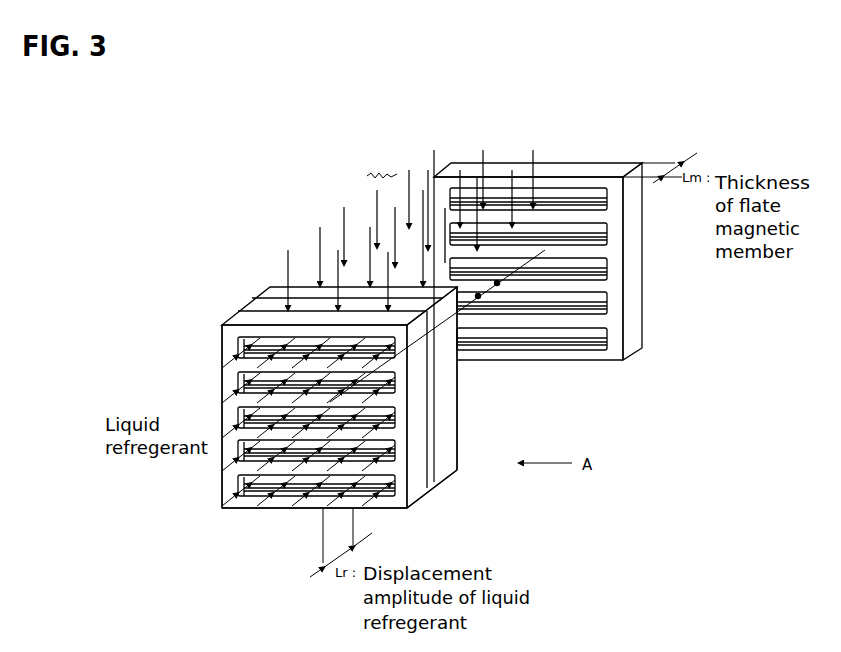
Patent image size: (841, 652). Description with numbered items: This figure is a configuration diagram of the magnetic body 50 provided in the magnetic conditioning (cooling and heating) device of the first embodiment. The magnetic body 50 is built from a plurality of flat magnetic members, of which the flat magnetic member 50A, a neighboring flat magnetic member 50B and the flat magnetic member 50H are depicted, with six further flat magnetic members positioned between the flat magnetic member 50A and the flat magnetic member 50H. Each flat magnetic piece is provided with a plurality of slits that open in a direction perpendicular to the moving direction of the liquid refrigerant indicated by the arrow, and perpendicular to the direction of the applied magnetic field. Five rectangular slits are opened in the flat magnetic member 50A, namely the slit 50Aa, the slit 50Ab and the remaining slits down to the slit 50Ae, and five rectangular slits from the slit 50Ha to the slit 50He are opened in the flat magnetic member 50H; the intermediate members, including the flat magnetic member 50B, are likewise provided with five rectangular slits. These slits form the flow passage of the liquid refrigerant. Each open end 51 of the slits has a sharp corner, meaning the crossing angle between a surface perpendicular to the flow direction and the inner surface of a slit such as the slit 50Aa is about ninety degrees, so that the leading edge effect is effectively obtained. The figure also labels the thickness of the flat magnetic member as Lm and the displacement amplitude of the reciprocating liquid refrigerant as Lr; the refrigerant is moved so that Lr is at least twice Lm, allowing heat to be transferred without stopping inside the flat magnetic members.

The magnetic body 50 is at (210, 160).
The flat magnetic member 50A is at (413, 505).
The rectangular slit 50Aa is at (250, 318).
The rectangular slit 50Ab is at (222, 372).
The rectangular slit 50Ae is at (222, 499).
The flat magnetic member 50B is at (452, 396).
The open end of slit 51 is at (238, 346).
The flat magnetic member 50H is at (643, 298).
The rectangular slit 50Ha is at (587, 193).
The rectangular slit 50He is at (583, 349).